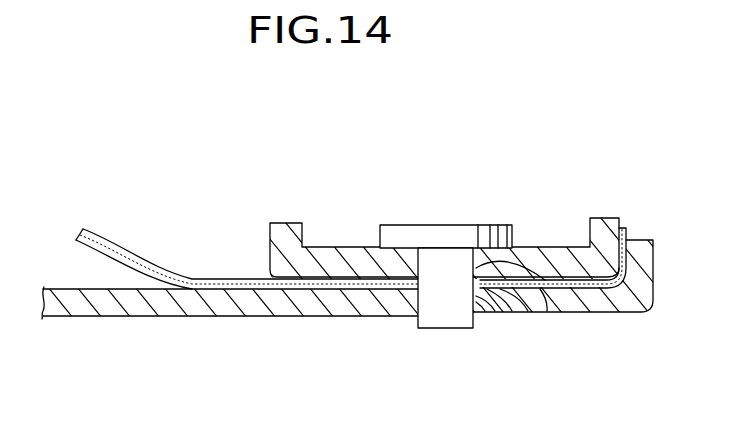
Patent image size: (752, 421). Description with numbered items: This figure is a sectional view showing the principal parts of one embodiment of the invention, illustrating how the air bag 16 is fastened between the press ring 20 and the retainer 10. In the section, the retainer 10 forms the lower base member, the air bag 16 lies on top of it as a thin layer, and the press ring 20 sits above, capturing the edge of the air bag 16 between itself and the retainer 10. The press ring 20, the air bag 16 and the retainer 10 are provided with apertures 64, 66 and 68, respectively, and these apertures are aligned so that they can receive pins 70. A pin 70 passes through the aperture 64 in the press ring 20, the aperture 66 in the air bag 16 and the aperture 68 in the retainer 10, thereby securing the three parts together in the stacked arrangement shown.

The retainer 10 is at (110, 318).
The air bag 16 is at (112, 253).
The press ring 20 is at (322, 247).
The aperture 64 is at (548, 312).
The aperture 66 is at (510, 312).
The aperture 68 is at (485, 315).
The pin 70 is at (461, 225).